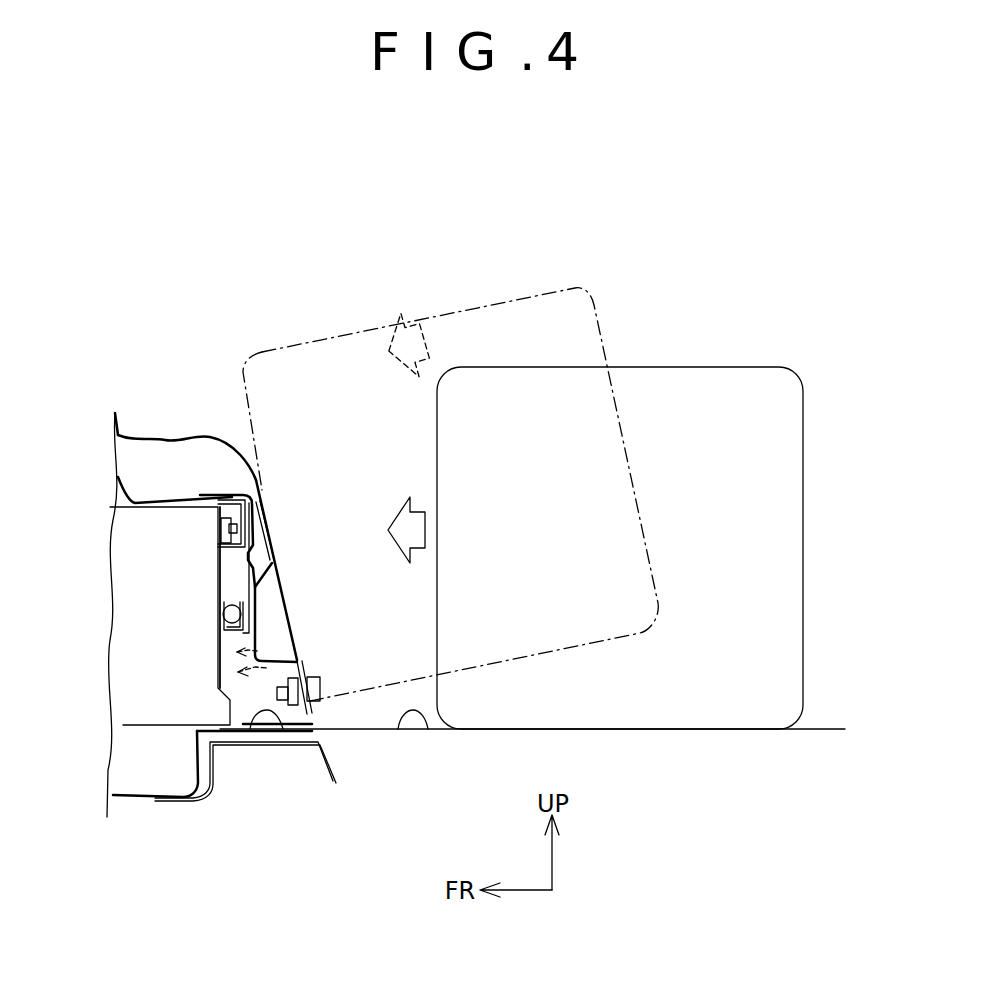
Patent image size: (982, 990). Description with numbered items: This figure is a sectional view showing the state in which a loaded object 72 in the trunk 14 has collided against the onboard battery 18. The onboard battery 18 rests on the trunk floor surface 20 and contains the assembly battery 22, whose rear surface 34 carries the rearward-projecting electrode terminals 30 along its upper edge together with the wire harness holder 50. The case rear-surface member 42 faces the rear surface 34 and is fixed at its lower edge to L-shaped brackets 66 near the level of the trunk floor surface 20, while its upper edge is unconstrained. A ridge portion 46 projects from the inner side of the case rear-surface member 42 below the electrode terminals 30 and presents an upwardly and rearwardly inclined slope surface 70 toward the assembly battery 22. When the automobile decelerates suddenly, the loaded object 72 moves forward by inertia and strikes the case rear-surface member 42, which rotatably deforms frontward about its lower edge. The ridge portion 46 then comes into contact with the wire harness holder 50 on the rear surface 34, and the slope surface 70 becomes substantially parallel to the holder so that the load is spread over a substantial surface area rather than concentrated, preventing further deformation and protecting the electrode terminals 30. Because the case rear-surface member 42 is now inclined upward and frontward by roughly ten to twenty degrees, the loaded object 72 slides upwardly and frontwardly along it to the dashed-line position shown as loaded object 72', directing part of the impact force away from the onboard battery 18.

The trunk 14 is at (356, 428).
The onboard battery 18 is at (138, 405).
The trunk floor surface 20 is at (403, 733).
The assembly battery 22 is at (150, 580).
The electrode terminal 30 is at (232, 522).
The rear surface 34 is at (300, 662).
The case rear-surface member 42 is at (290, 615).
The ridge portion 46 is at (250, 653).
The wire harness holder 50 is at (274, 563).
The L-shaped bracket 66 is at (262, 713).
The slope surface 70 is at (248, 642).
The loaded object 72 is at (595, 497).
The loaded object (displaced position) 72' is at (472, 470).